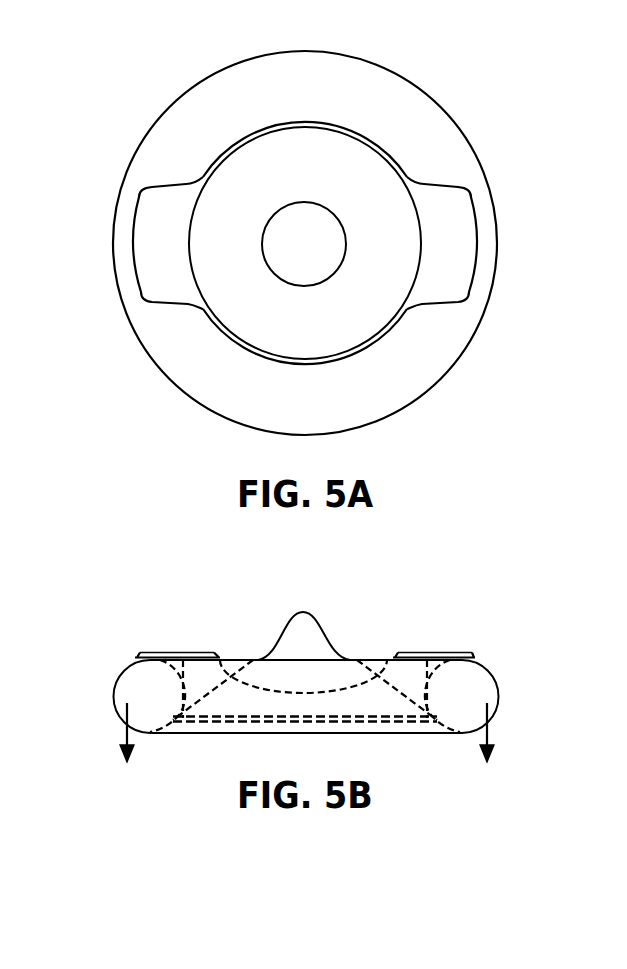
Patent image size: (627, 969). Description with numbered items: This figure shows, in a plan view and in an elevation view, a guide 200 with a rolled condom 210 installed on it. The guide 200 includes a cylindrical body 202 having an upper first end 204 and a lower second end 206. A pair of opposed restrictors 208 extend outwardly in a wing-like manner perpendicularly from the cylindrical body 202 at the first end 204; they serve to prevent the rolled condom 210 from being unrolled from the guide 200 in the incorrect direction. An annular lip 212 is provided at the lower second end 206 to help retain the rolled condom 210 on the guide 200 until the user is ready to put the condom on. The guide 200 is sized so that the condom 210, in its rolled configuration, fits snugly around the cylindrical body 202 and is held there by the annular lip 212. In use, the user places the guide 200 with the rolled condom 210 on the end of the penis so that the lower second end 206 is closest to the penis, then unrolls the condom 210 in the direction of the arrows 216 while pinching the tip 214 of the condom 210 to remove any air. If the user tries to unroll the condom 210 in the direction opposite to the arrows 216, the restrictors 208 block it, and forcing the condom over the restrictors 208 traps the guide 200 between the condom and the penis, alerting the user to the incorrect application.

In FIG. 5A, the guide 200 is at (452, 166).
In FIG. 5B, the guide 200 is at (444, 632).
In FIG. 5A, the cylindrical body 202 is at (392, 334).
In FIG. 5A, the upper first end 204 is at (187, 291).
In FIG. 5B, the upper first end 204 is at (395, 656).
In FIG. 5B, the lower second end 206 is at (400, 723).
In FIG. 5A, the restrictors 208 is at (138, 215).
In FIG. 5B, the restrictors 208 is at (140, 655).
In FIG. 5A, the rolled condom 210 is at (407, 80).
In FIG. 5B, the rolled condom 210 is at (488, 670).
In FIG. 5B, the annular lip 212 is at (175, 720).
In FIG. 5A, the tip 214 is at (318, 205).
In FIG. 5B, the tip 214 is at (317, 610).
In FIG. 5B, the arrows 216 is at (127, 728).